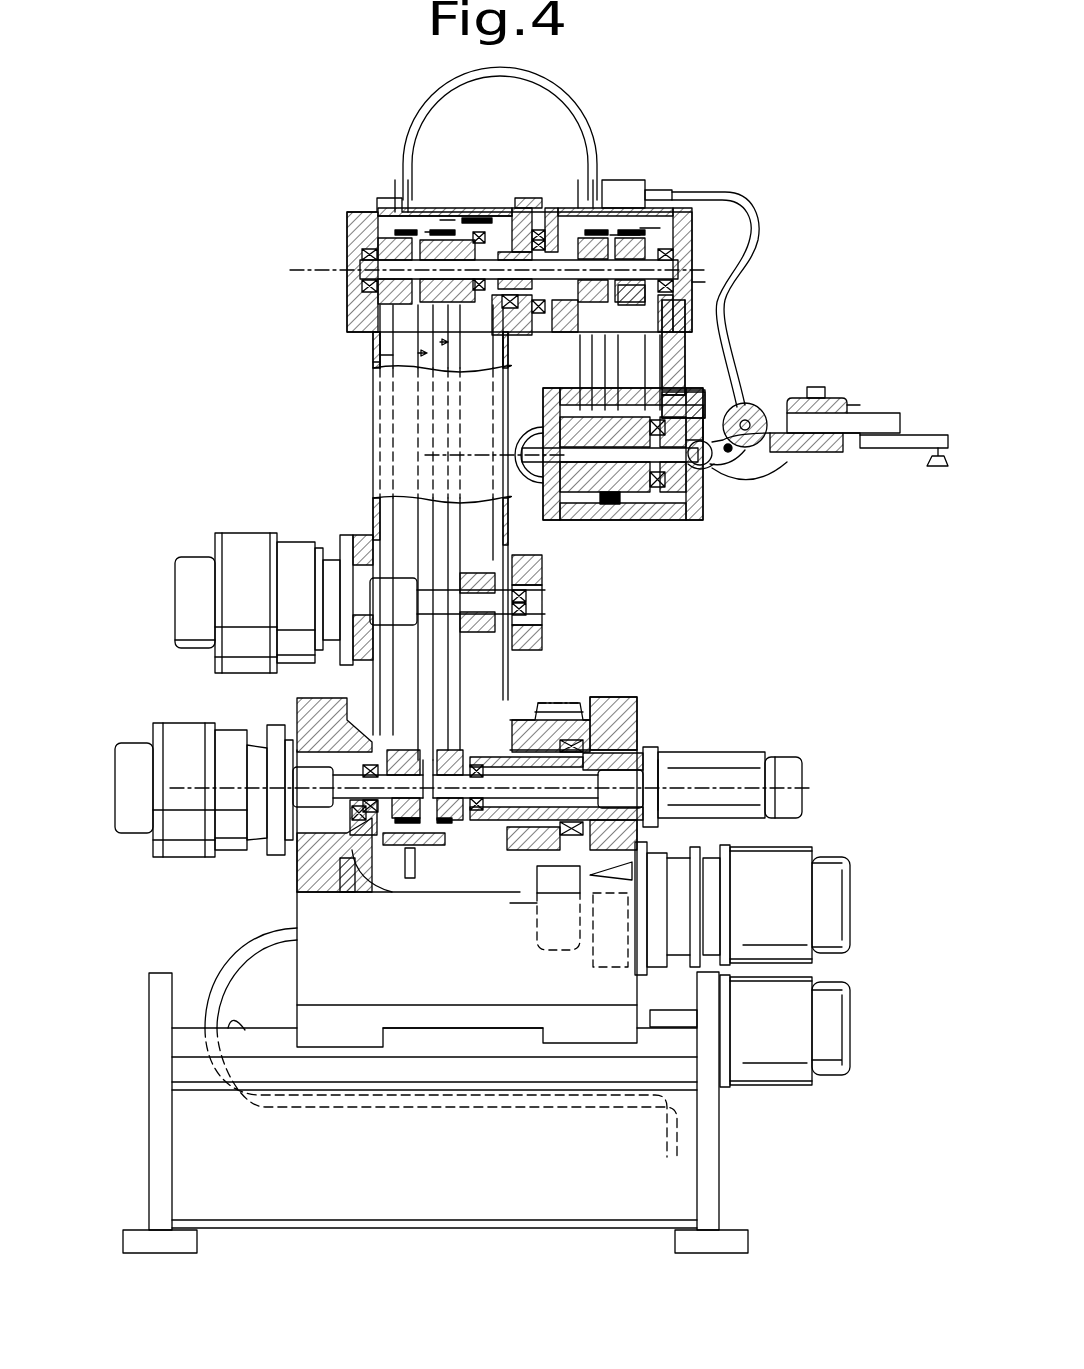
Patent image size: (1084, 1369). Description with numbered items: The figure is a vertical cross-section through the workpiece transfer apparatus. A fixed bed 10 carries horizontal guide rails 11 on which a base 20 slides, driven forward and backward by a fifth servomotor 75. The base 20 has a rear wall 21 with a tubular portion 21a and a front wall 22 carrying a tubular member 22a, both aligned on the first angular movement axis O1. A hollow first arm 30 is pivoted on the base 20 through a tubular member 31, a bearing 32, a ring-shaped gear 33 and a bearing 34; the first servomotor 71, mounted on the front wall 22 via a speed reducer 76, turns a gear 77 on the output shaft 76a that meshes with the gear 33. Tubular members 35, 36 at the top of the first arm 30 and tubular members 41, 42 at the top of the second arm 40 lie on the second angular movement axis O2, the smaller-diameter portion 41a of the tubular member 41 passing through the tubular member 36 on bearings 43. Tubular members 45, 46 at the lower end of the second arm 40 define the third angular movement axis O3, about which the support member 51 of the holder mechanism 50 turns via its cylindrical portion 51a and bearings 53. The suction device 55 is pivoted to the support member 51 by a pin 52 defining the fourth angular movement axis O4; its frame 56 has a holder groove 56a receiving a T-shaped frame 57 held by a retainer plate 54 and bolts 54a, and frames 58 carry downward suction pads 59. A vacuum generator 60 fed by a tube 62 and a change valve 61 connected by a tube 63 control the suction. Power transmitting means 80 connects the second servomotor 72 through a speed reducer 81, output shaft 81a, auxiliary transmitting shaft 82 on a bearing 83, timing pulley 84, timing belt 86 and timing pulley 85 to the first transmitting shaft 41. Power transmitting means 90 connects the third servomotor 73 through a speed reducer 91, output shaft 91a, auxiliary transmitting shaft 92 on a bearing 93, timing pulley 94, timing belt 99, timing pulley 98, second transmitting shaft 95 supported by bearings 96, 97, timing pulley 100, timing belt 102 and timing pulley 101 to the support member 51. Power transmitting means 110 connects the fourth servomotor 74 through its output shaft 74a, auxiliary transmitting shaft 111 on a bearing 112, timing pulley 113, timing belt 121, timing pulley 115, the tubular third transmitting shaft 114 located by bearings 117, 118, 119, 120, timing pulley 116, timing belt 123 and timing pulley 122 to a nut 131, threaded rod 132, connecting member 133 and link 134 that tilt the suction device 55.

The fixed bed 10 is at (725, 1170).
The guide rails 11 is at (240, 1045).
The base 20 is at (297, 976).
The rear wall 21 is at (297, 705).
The tubular portion 21a is at (396, 862).
The front wall 22 is at (605, 698).
The tubular member 22a is at (643, 748).
The first arm 30 is at (372, 440).
The tubular member 31 is at (380, 862).
The bearing 32 is at (362, 865).
The ring-shaped gear 33 is at (565, 720).
The bearing 34 is at (615, 715).
The tubular member 35 is at (355, 310).
The tubular member 36 is at (533, 235).
The second arm 40 is at (668, 374).
The tubular member 41 is at (556, 238).
The smaller-diameter portion 41a is at (525, 235).
The tubular member 42 is at (662, 242).
The bearings 43 is at (470, 238).
The tubular member 45 is at (545, 512).
The tubular member 46 is at (712, 520).
The holder mechanism 50 is at (880, 386).
The support member 51 is at (712, 462).
The cylindrical portion 51a is at (692, 535).
The pin 52 is at (752, 406).
The bearings 53 is at (665, 520).
The retainer plate 54 is at (830, 404).
The bolts 54a is at (816, 387).
The suction device 55 is at (879, 458).
The frame 56 is at (808, 452).
The holder groove 56a is at (830, 455).
The T-shaped frame 57 is at (887, 413).
The frames 58 is at (920, 435).
The suction pads 59 is at (945, 466).
The vacuum generator 60 is at (616, 225).
The change valve 61 is at (668, 195).
The tube 62 is at (213, 974).
The tube 63 is at (758, 242).
The first servomotor 71 is at (832, 848).
The second servomotor 72 is at (237, 533).
The third servomotor 73 is at (170, 724).
The fourth servomotor 74 is at (735, 752).
The output shaft 74a is at (656, 790).
The fifth servomotor 75 is at (848, 1040).
The speed reducer 76 is at (700, 850).
The output shaft 76a is at (612, 868).
The gear 77 is at (545, 888).
The power transmitting means 80 is at (385, 347).
The speed reducer 81 is at (290, 540).
The output shaft 81a is at (325, 548).
The auxiliary transmitting shaft 82 is at (530, 620).
The bearing 83 is at (525, 598).
The timing pulley 84 is at (525, 572).
The timing pulley 85 is at (480, 235).
The timing belt 86 is at (505, 545).
The power transmitting means 90 is at (370, 365).
The speed reducer 91 is at (233, 832).
The output shaft 91a is at (292, 782).
The auxiliary transmitting shaft 92 is at (420, 835).
The bearing 93 is at (290, 848).
The timing pulley 94 is at (447, 835).
The second transmitting shaft 95 is at (395, 250).
The bearing 96 is at (352, 293).
The bearing 97 is at (700, 288).
The timing pulley 98 is at (385, 212).
The timing belt 99 is at (405, 530).
The timing pulley 100 is at (692, 235).
The timing pulley 101 is at (636, 505).
The timing belt 102 is at (650, 372).
The power transmitting means 110 is at (395, 358).
The auxiliary transmitting shaft 111 is at (540, 712).
The bearing 112 is at (462, 758).
The timing pulley 113 is at (450, 810).
The third transmitting shaft 114 is at (515, 330).
The timing pulley 115 is at (435, 230).
The timing pulley 116 is at (622, 235).
The bearing 117 is at (425, 215).
The bearing 118 is at (445, 225).
The bearing 119 is at (588, 200).
The bearing 120 is at (640, 235).
The timing belt 121 is at (450, 640).
The timing pulley 122 is at (612, 522).
The timing belt 123 is at (598, 345).
The nut 131 is at (588, 505).
The threaded rod 132 is at (527, 440).
The connecting member 133 is at (690, 515).
The link 134 is at (703, 498).
The first angular movement axis O1 is at (190, 790).
The second angular movement axis O2 is at (360, 268).
The third angular movement axis O3 is at (510, 455).
The fourth angular movement axis O4 is at (750, 458).